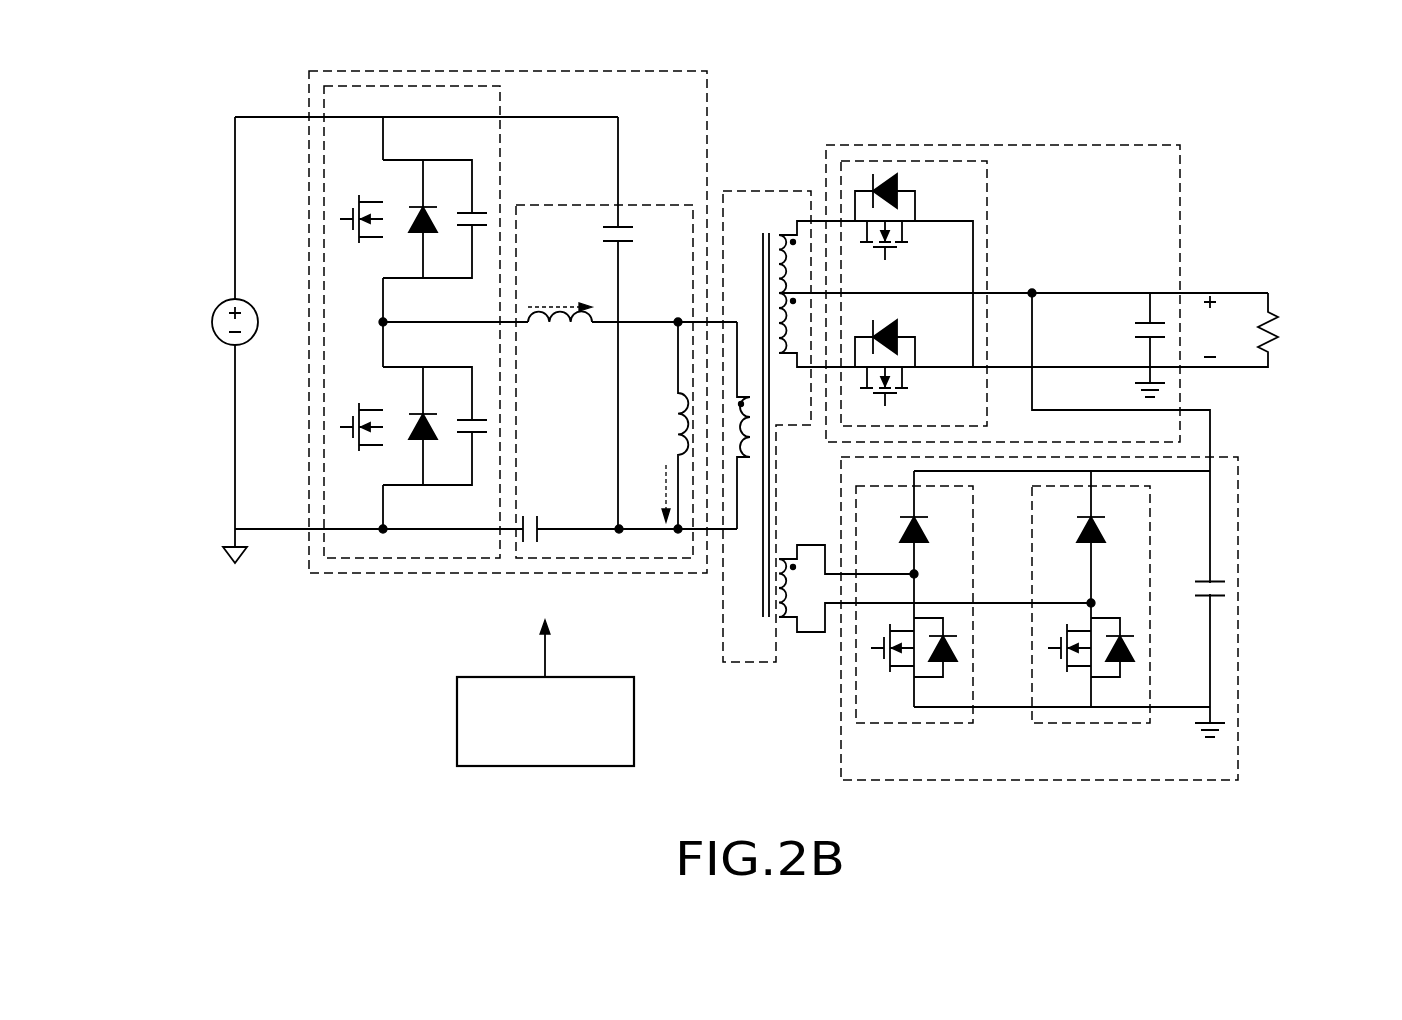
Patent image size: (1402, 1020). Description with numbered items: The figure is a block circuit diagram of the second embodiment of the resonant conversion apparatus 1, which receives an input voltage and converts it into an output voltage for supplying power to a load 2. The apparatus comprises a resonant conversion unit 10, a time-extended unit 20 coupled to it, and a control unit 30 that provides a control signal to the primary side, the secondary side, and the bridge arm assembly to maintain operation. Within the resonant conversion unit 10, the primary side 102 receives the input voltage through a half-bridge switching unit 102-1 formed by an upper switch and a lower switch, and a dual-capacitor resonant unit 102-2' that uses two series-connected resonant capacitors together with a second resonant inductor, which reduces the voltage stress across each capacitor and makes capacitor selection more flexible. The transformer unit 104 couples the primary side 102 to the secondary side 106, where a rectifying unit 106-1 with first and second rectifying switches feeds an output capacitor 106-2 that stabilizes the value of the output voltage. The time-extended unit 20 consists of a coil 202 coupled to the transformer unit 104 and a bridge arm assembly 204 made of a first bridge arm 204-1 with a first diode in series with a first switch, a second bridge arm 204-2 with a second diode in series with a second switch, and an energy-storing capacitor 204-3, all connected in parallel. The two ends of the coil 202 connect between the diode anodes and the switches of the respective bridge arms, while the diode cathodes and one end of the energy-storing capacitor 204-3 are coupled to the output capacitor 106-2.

The resonant conversion apparatus 1 is at (745, 24).
The load 2 is at (1280, 333).
The resonant conversion unit 10 is at (272, 560).
The time-extended unit 20 is at (1250, 686).
The control unit 30 is at (557, 683).
The primary side 102 is at (510, 75).
The switching unit 102-1 is at (492, 97).
The resonant unit 102-2' is at (560, 337).
The transformer unit 104 is at (765, 190).
The secondary side 106 is at (1010, 147).
The rectifying unit 106-1 is at (978, 203).
The output capacitor 106-2 is at (1136, 330).
The coil 202 is at (783, 556).
The bridge arm assembly 204 is at (1235, 527).
The first bridge arm 204-1 is at (913, 715).
The second bridge arm 204-2 is at (1090, 715).
The energy-storing capacitor 204-3 is at (1225, 589).